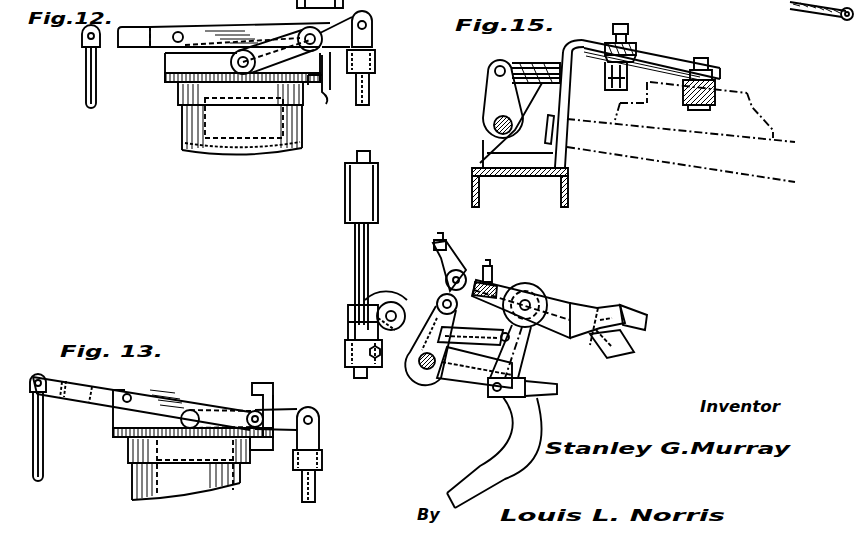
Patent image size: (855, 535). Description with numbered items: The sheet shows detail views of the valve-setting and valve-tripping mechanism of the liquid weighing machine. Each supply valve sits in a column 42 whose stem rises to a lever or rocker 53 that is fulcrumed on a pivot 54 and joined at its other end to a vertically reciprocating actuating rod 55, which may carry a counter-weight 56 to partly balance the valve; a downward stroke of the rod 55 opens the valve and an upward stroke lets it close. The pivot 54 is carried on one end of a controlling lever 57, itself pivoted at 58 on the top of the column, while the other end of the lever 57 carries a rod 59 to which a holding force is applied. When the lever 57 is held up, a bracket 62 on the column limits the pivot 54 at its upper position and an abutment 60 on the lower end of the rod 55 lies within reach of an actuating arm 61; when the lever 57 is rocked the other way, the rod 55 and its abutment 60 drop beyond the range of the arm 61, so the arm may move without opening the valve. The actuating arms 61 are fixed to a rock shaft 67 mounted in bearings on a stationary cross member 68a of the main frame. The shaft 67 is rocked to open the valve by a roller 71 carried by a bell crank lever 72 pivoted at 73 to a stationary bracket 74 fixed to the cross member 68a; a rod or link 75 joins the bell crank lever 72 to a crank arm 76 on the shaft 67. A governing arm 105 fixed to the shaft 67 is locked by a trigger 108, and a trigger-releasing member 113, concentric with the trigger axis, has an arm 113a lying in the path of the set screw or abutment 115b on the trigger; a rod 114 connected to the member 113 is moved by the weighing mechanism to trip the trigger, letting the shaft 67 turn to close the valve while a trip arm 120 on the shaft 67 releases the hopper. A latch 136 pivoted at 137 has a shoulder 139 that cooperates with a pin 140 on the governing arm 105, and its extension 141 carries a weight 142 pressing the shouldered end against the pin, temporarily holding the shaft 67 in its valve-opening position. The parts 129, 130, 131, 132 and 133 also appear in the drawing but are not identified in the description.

In FIG. 12, the column 42 is at (192, 127).
In FIG. 12, the lever or rocker 53 is at (233, 62).
In FIG. 13, the lever or rocker 53 is at (287, 410).
In FIG. 12, the pivot or fulcrum 54 is at (303, 32).
In FIG. 13, the pivot or fulcrum 54 is at (253, 410).
In FIG. 12, the actuating rod 55 is at (372, 95).
In FIG. 13, the actuating rod 55 is at (315, 492).
In FIG. 13, the counter-weight 56 is at (350, 197).
In FIG. 12, the lever 57 is at (132, 32).
In FIG. 12, the pivot 58 is at (182, 35).
In FIG. 13, the pivot 58 is at (132, 398).
In FIG. 12, the rod 59 is at (89, 88).
In FIG. 13, the rod 59 is at (43, 460).
In FIG. 13, the abutment 60 is at (345, 353).
In FIG. 13, the actuating arm 61 is at (350, 320).
In FIG. 12, the bracket 62 is at (330, 96).
In FIG. 13, the bracket 62 is at (258, 384).
In FIG. 15, the rock shaft 67 is at (492, 125).
In FIG. 15, the cross member 68a is at (507, 178).
In FIG. 15, the roller or projection 71 is at (718, 90).
In FIG. 15, the bell crank lever 72 is at (652, 64).
In FIG. 15, the pivot 73 is at (616, 43).
In FIG. 15, the stationary bracket 74 is at (575, 103).
In FIG. 15, the rod or link 75 is at (568, 57).
In FIG. 15, the crank arm 76 is at (493, 98).
In FIG. 13, the governing arm 105 is at (430, 320).
In FIG. 13, the trigger 108 is at (460, 264).
In FIG. 13, the trigger-releasing member 113 is at (518, 355).
In FIG. 13, the arm 113a is at (497, 283).
In FIG. 13, the rod 114 is at (545, 386).
In FIG. 13, the set screw or abutment 115b is at (495, 266).
In FIG. 13, the trip arm 120 is at (478, 478).
In FIG. 13, the hub 129 is at (556, 308).
In FIG. 13, the plate 130 is at (607, 350).
In FIG. 13, the bracket arc 131 is at (370, 287).
In FIG. 13, the roller 132 is at (378, 297).
In FIG. 13, the roller pin 133 is at (375, 307).
In FIG. 13, the latch 136 is at (468, 348).
In FIG. 13, the pivot 137 is at (503, 341).
In FIG. 13, the shoulder 139 is at (420, 365).
In FIG. 13, the pin or projection 140 is at (450, 330).
In FIG. 13, the extension 141 is at (648, 318).
In FIG. 13, the weight 142 is at (610, 308).